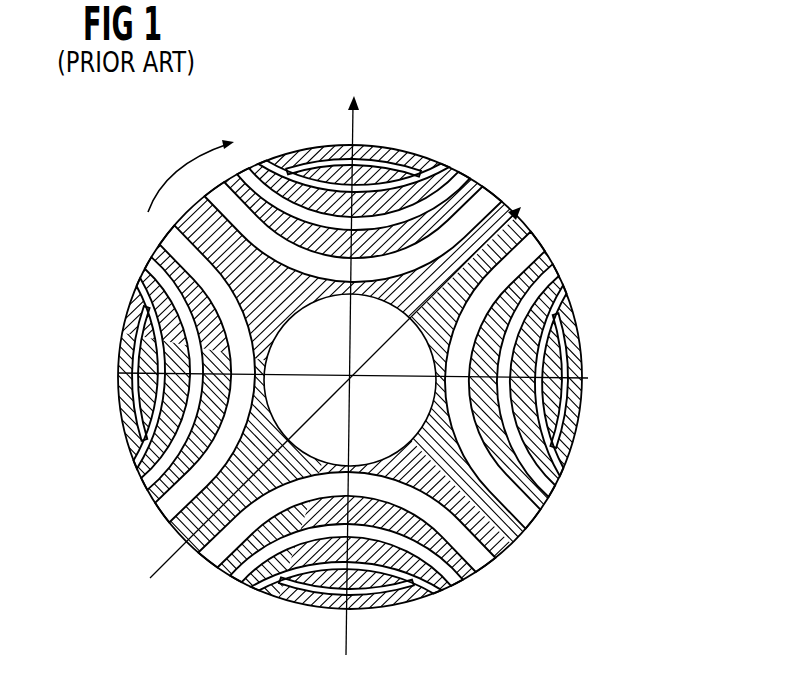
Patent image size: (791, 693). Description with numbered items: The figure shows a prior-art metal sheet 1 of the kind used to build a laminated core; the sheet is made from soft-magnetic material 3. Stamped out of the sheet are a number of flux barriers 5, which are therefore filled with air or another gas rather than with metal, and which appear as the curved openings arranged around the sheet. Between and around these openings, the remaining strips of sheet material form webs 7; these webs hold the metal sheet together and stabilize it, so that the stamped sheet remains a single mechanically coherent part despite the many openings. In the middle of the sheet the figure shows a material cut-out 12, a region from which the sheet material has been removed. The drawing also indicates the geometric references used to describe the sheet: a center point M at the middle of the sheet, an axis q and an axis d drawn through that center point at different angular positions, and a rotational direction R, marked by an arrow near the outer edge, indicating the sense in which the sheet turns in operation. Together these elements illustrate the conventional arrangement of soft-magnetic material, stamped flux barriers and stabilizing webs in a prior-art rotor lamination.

The rotor of synchronous reluctance machine 1 is at (508, 102).
The soft-magnetic material 3 is at (472, 203).
The flux barriers 5 is at (441, 208).
The webs 7 is at (556, 290).
The material cut-out 12 is at (375, 418).
The axis q is at (351, 127).
The axis d is at (524, 200).
The center point M is at (270, 353).
The rotational direction R is at (180, 178).